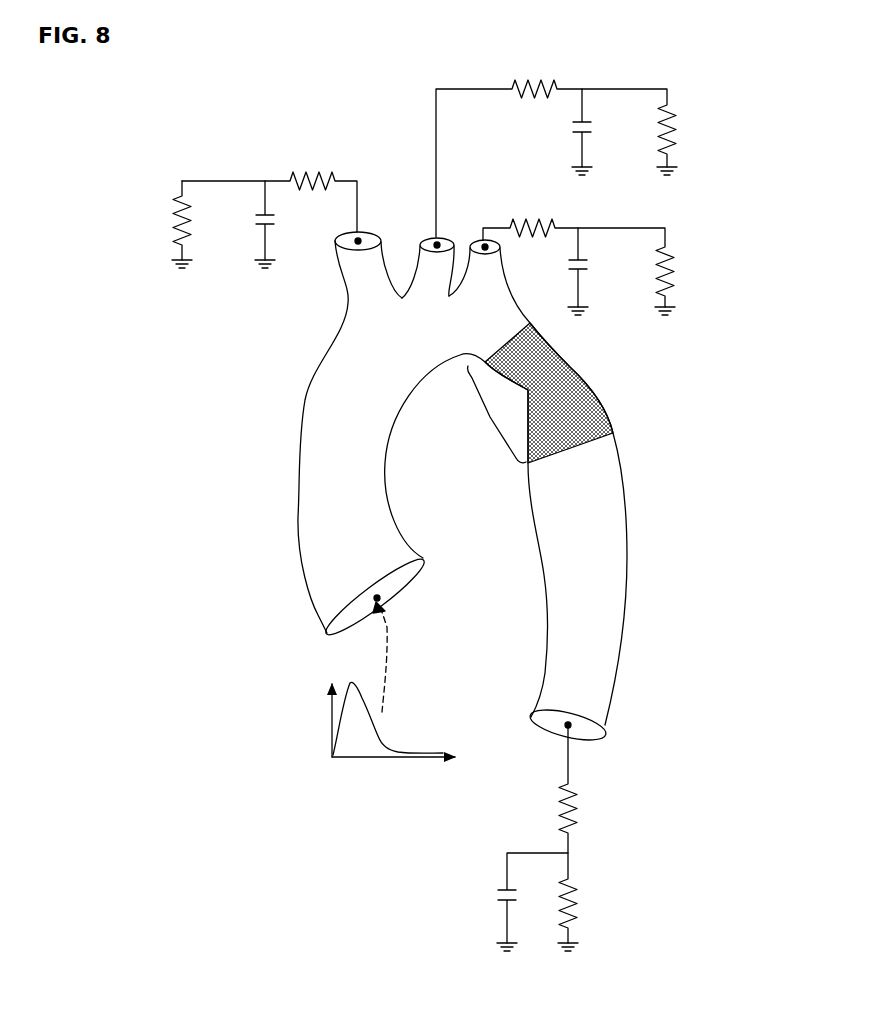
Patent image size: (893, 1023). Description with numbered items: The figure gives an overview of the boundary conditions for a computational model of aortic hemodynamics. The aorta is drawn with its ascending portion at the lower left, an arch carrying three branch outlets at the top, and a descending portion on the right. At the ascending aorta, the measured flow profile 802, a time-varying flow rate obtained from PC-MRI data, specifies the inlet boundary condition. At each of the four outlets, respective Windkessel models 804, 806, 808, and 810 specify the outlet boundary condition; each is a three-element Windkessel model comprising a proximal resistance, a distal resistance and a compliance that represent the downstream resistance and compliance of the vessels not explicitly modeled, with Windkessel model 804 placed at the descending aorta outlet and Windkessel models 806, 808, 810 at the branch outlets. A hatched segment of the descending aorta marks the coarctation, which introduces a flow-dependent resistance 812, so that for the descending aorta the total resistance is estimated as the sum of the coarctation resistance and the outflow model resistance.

The measured flow profile 802 is at (330, 756).
The Windkessel model 804 is at (583, 862).
The Windkessel model 806 is at (170, 167).
The Windkessel model 808 is at (450, 72).
The Windkessel model 810 is at (678, 222).
The flow-dependent resistance of the coarctation 812 is at (515, 399).